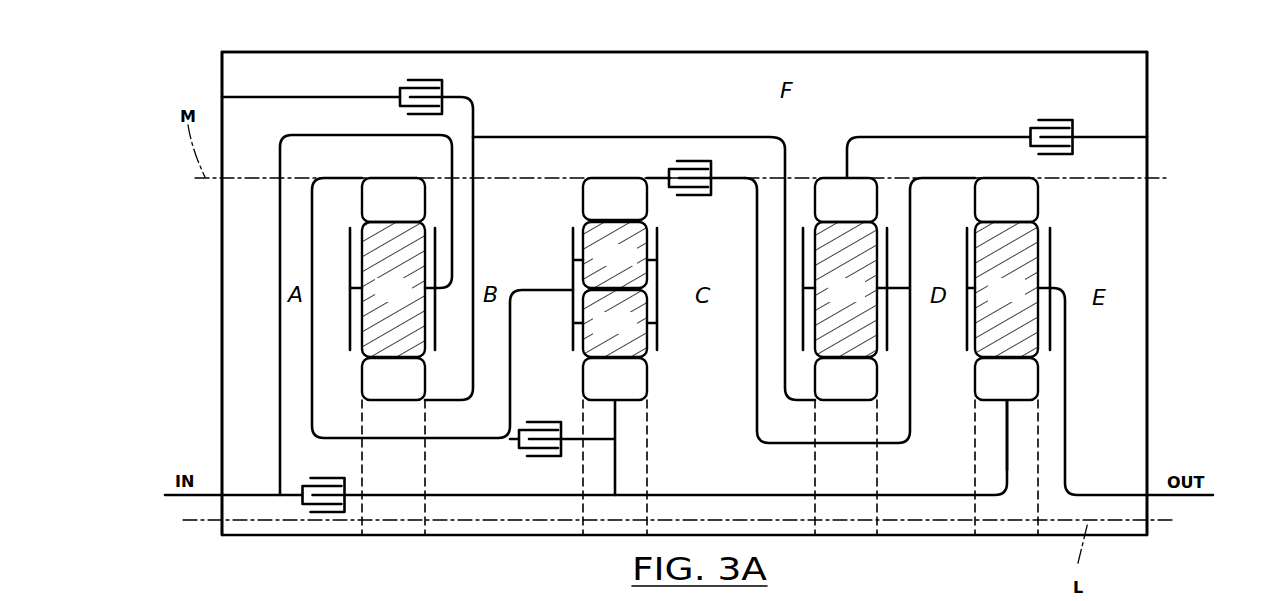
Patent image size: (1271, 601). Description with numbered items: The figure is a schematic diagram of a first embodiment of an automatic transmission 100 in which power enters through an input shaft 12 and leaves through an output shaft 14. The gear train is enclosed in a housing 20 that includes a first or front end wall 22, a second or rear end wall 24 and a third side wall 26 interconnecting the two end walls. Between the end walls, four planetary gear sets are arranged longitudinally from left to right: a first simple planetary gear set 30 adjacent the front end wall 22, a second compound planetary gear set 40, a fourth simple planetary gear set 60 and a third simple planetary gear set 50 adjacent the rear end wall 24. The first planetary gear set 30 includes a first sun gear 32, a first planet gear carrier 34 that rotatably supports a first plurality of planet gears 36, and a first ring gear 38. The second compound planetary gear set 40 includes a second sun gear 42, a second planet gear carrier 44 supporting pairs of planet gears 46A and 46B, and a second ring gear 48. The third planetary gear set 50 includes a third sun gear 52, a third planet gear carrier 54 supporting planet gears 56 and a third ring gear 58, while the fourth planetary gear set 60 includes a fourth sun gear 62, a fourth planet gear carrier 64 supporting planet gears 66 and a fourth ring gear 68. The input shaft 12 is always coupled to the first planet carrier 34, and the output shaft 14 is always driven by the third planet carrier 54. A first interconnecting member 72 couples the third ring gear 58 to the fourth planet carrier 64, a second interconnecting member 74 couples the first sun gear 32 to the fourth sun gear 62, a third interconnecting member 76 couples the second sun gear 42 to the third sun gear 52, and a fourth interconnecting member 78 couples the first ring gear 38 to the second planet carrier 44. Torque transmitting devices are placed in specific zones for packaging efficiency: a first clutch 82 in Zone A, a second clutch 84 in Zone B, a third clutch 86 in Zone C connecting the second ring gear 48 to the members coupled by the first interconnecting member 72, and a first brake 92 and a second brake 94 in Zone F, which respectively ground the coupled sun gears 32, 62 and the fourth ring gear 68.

The input shaft 12 is at (177, 500).
The output shaft 14 is at (1200, 497).
The housing 20 is at (835, 28).
The first or front end wall 22 is at (222, 313).
The second or rear end wall 24 is at (1150, 327).
The third side wall 26 is at (655, 52).
The first simple planetary gear set 30 is at (382, 294).
The first sun gear 32 is at (381, 390).
The first planet gear carrier 34 is at (436, 250).
The first plurality of pinion or planet gears 36 is at (381, 301).
The first ring gear 38 is at (381, 211).
The second compound planetary gear set 40 is at (613, 295).
The second sun gear 42 is at (602, 390).
The second planet gear carrier 44 is at (573, 238).
The second plurality of pinion or planet gears 46A is at (597, 266).
The second plurality of pinion or planet gears 46B is at (597, 334).
The second ring gear 48 is at (602, 210).
The third simple planetary gear set 50 is at (1042, 295).
The third sun gear 52 is at (994, 390).
The third planet gear carrier 54 is at (1052, 247).
The third plurality of pinion or planet gears 56 is at (994, 301).
The third ring gear 58 is at (994, 211).
The fourth simple planetary gear set 60 is at (880, 295).
The fourth sun gear 62 is at (833, 390).
The fourth planet gear carrier 64 is at (888, 248).
The fourth plurality of pinion or planet gears 66 is at (833, 301).
The fourth ring gear 68 is at (833, 211).
The first shaft, quill or interconnecting member 72 is at (913, 415).
The second shaft, quill or interconnecting member 74 is at (786, 162).
The third shaft, quill or interconnecting member 76 is at (1008, 458).
The fourth shaft, quill or interconnecting member 78 is at (310, 237).
The first clutch 82 is at (330, 513).
The second clutch 84 is at (545, 458).
The third clutch 86 is at (700, 162).
The first brake 92 is at (430, 80).
The second brake 94 is at (1055, 118).
The automatic transmission 100 is at (1197, 58).